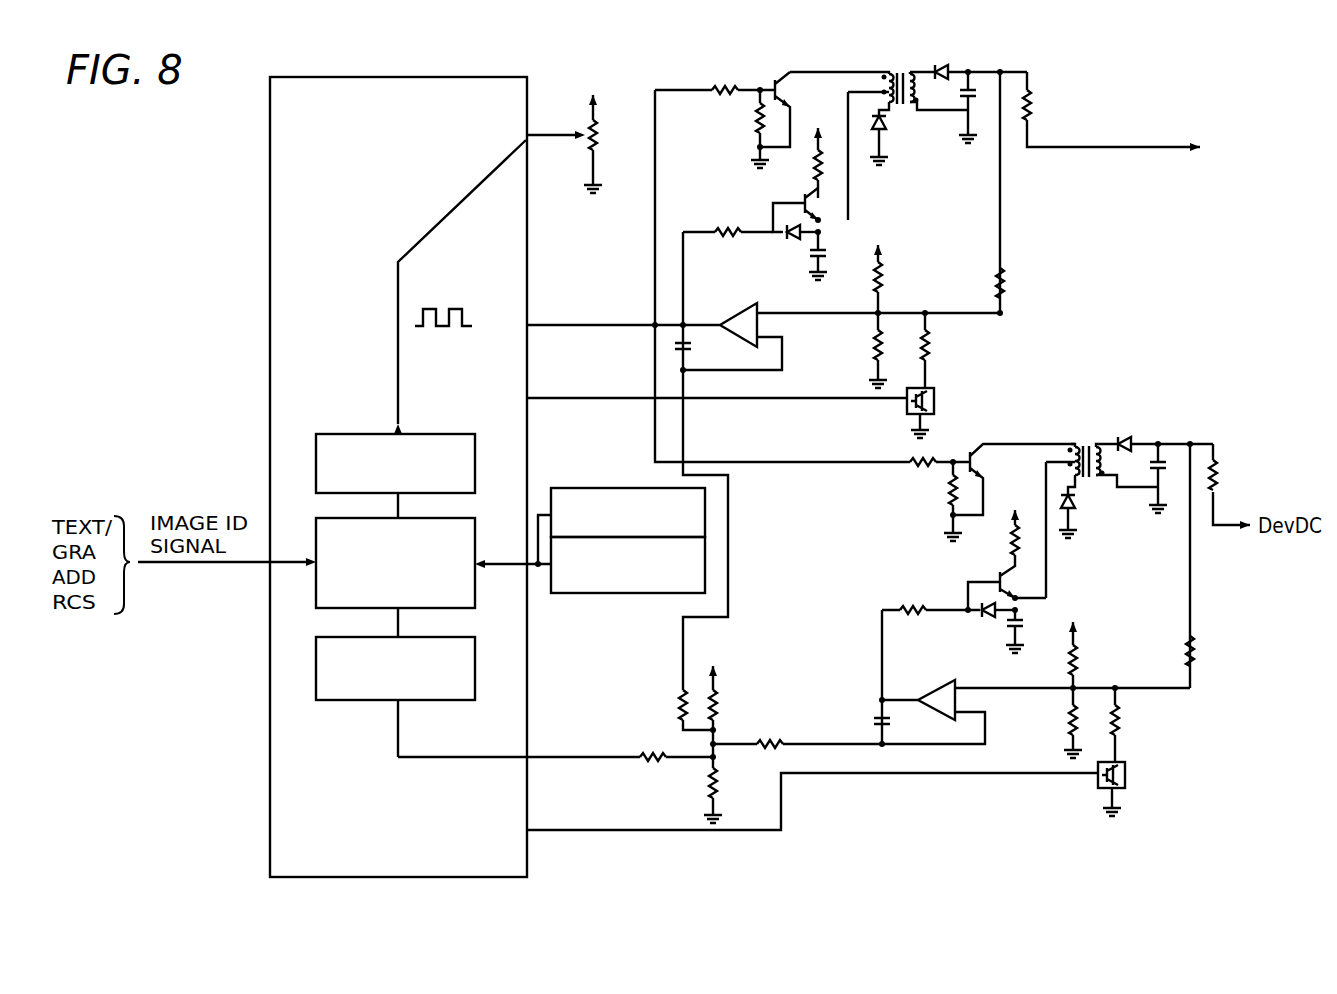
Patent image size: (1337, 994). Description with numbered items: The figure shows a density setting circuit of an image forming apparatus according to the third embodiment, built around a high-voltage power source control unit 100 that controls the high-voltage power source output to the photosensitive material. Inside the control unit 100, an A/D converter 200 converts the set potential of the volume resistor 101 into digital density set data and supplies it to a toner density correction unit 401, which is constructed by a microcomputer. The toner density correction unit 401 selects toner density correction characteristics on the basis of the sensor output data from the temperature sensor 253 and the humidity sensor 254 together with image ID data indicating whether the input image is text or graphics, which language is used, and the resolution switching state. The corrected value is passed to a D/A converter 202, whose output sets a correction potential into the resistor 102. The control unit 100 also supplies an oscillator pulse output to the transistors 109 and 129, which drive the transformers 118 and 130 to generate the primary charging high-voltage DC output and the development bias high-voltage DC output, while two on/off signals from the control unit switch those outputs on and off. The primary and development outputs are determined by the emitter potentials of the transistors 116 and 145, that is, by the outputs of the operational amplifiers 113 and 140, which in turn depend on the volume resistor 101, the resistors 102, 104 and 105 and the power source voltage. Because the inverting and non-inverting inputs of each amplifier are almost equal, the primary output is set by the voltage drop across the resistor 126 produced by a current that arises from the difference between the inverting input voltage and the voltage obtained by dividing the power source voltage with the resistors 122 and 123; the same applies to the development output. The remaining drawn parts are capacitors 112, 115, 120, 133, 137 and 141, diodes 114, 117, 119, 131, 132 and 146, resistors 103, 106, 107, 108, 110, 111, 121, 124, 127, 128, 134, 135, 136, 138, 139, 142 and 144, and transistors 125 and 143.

The high-voltage power source control unit 100 is at (530, 99).
The volume resistor 101 is at (595, 135).
The resistor 102 is at (653, 770).
The resistor 103 is at (675, 708).
The resistor 104 is at (723, 706).
The resistor 105 is at (720, 778).
The resistor 106 is at (768, 740).
The resistor 107 is at (730, 75).
The resistor 108 is at (756, 123).
The transistor 109 is at (789, 88).
The resistor 110 is at (808, 167).
The resistor 111 is at (728, 234).
The capacitor 112 is at (695, 348).
The operational amplifier 113 is at (743, 303).
The diode 114 is at (787, 240).
The capacitor 115 is at (823, 255).
The transistor 116 is at (831, 203).
The diode 117 is at (893, 126).
The transformer 118 is at (899, 72).
The diode 119 is at (930, 70).
The capacitor 120 is at (963, 95).
The resistor 121 is at (1032, 112).
The resistor 122 is at (885, 282).
The resistor 123 is at (871, 348).
The resistor 124 is at (927, 348).
The transistor 125 is at (934, 403).
The resistor 126 is at (1006, 279).
The resistor 127 is at (920, 470).
The resistor 128 is at (946, 506).
The transistor 129 is at (987, 460).
The transformer 130 is at (1085, 444).
The diode 131 is at (1074, 507).
The diode 132 is at (1123, 440).
The capacitor 133 is at (1162, 458).
The resistor 134 is at (1218, 480).
The resistor 135 is at (915, 602).
The resistor 136 is at (1004, 542).
The capacitor 137 is at (1026, 628).
The resistor 138 is at (1081, 655).
The resistor 139 is at (1064, 720).
The operational amplifier 140 is at (935, 682).
The capacitor 141 is at (876, 718).
The resistor 142 is at (1121, 731).
The transistor 143 is at (1130, 777).
The resistor 144 is at (1195, 653).
The transistor 145 is at (1025, 588).
The diode 146 is at (984, 618).
The A/D converter 200 is at (440, 436).
The D/A converter 202 is at (474, 652).
The temperature sensor 253 is at (607, 488).
The humidity sensor 254 is at (611, 596).
The toner density correction unit 401 is at (474, 532).